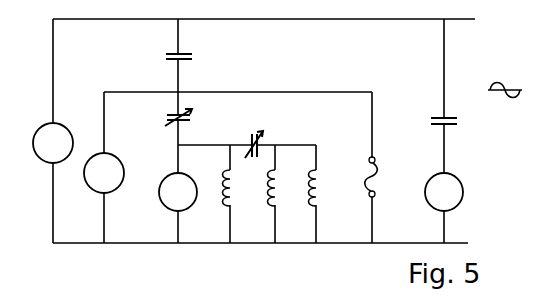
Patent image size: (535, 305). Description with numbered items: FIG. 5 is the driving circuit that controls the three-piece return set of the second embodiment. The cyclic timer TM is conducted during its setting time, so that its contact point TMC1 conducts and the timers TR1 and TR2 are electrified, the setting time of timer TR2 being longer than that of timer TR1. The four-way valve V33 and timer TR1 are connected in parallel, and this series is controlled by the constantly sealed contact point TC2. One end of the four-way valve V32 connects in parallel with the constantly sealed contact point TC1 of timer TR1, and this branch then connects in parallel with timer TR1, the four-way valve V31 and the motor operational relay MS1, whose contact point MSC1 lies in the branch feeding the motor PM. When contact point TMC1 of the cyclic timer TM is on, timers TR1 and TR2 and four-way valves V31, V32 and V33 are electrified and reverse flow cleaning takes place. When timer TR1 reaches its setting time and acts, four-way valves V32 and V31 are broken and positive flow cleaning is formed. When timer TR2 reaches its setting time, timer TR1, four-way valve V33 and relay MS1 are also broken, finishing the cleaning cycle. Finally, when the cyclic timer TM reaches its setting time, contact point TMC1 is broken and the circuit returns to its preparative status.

The cyclic timer TM is at (53, 143).
The timer TR2 is at (104, 173).
The timer TR1 is at (178, 192).
The motor PM is at (444, 192).
The contact point of cyclic timer TMC1 is at (195, 48).
The constantly sealed contact point TC2 is at (162, 117).
The constantly sealed contact point of timer TR1 TC1 is at (265, 141).
The contact point of motor operational relay MSC1 is at (429, 115).
The motor operational relay MS1 is at (384, 177).
The four-way valve V33 is at (216, 191).
The four-way valve V32 is at (261, 194).
The four-way valve V31 is at (301, 195).